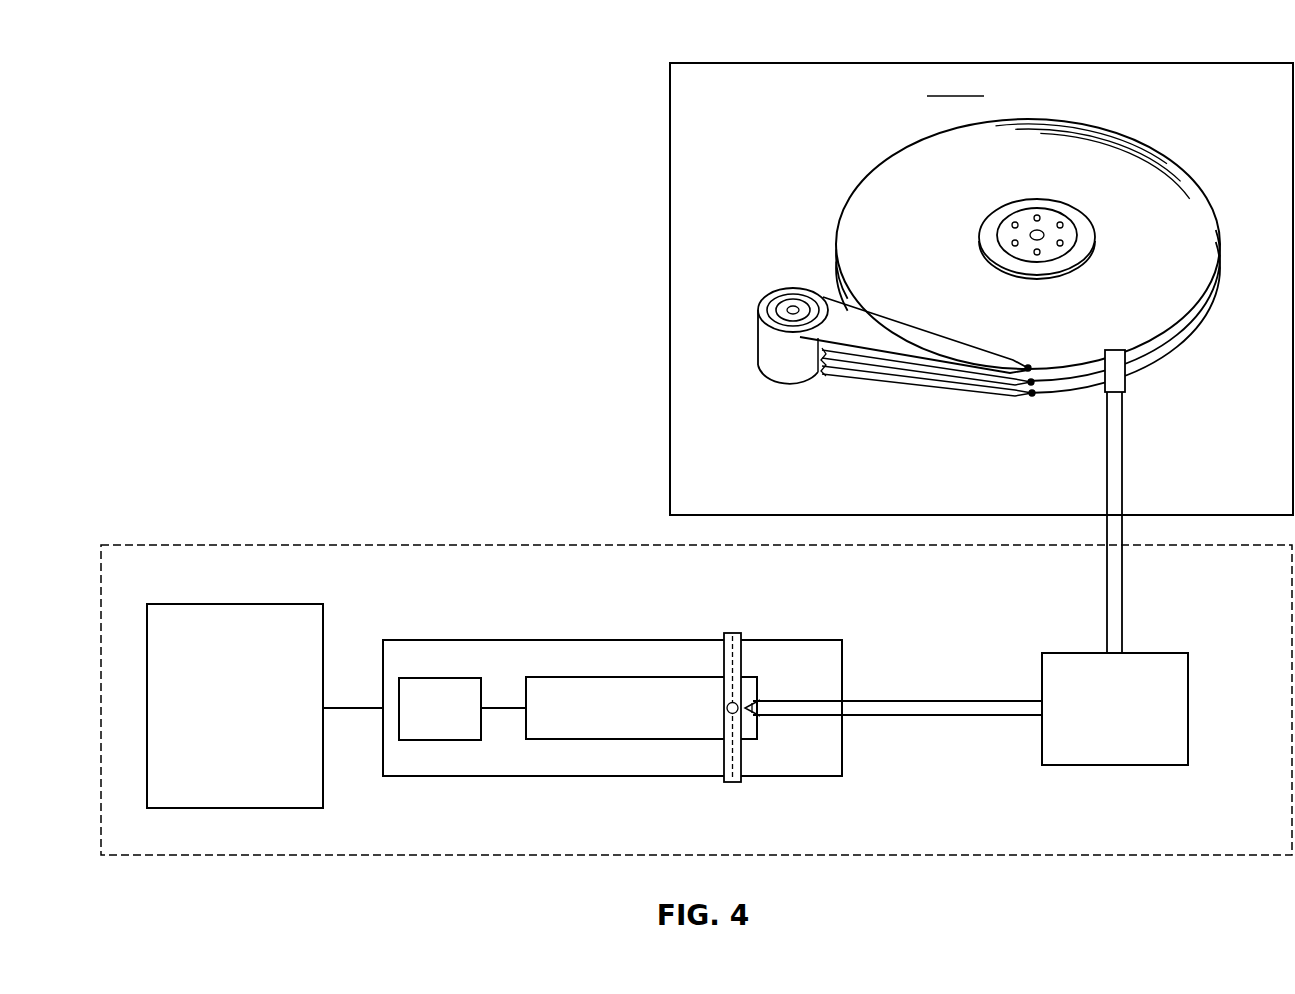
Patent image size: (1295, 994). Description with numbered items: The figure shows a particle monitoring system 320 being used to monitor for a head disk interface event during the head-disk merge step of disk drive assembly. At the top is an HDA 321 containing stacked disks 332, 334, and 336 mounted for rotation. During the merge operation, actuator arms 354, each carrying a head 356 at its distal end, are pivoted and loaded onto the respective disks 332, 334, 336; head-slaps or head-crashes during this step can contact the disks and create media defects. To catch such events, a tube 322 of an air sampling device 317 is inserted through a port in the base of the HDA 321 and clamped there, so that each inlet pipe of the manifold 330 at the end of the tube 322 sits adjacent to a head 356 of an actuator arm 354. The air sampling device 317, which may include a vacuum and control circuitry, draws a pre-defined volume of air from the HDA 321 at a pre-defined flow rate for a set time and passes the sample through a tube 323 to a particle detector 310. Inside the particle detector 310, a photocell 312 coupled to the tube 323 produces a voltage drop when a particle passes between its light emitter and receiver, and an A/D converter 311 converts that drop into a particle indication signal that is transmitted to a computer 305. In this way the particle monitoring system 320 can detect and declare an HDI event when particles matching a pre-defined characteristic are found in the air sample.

The HDA 321 is at (1225, 63).
The disk 332 is at (1197, 287).
The disk 334 is at (1202, 310).
The disk 336 is at (1192, 332).
The actuator arm 354 is at (930, 333).
The head 356 is at (1028, 366).
The manifold 330 is at (1125, 385).
The tube 322 is at (1122, 585).
The particle monitoring system 320 is at (166, 542).
The computer 305 is at (300, 604).
The particle detector 310 is at (812, 640).
The A/D converter 311 is at (455, 740).
The photocell 312 is at (610, 739).
The tube 323 is at (922, 701).
The air sampling device 317 is at (1148, 653).